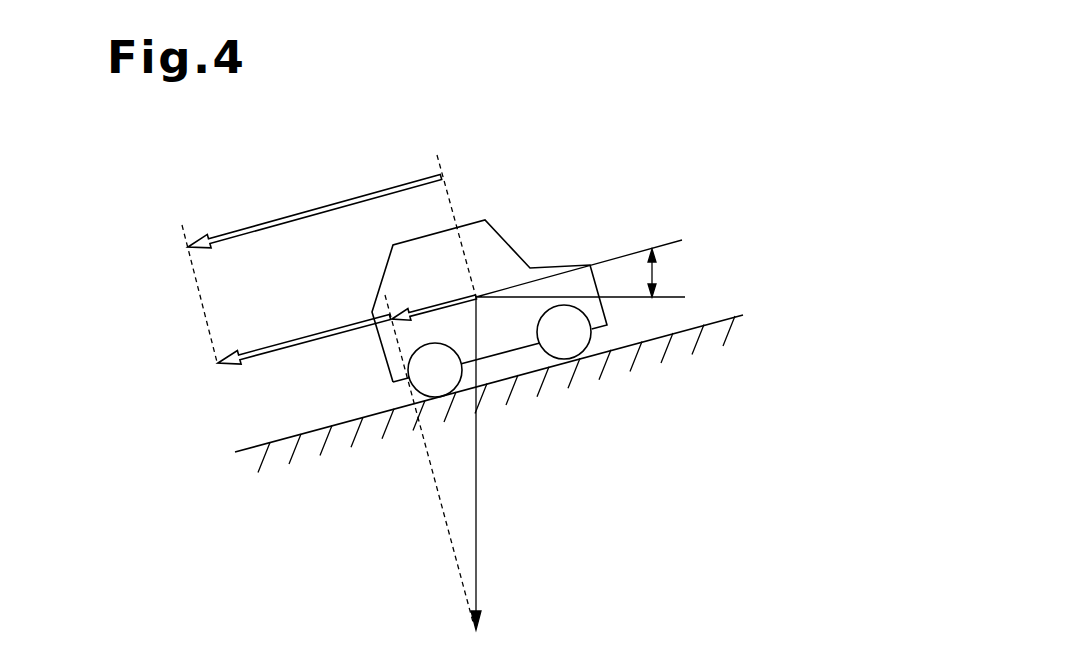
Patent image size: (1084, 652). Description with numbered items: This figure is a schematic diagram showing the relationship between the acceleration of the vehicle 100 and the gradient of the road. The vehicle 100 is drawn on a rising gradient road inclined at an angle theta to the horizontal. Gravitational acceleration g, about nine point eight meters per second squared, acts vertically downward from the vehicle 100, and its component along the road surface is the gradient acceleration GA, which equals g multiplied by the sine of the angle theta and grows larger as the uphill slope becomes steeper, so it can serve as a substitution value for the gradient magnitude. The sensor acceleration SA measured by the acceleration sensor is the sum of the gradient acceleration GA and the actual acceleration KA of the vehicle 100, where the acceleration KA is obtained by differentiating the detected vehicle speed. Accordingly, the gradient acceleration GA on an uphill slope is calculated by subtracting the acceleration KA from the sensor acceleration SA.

The vehicle 100 is at (509, 242).
The sensor acceleration SA is at (315, 211).
The acceleration of the vehicle KA is at (304, 335).
The gradient acceleration GA is at (434, 296).
The gravitational acceleration g is at (483, 463).